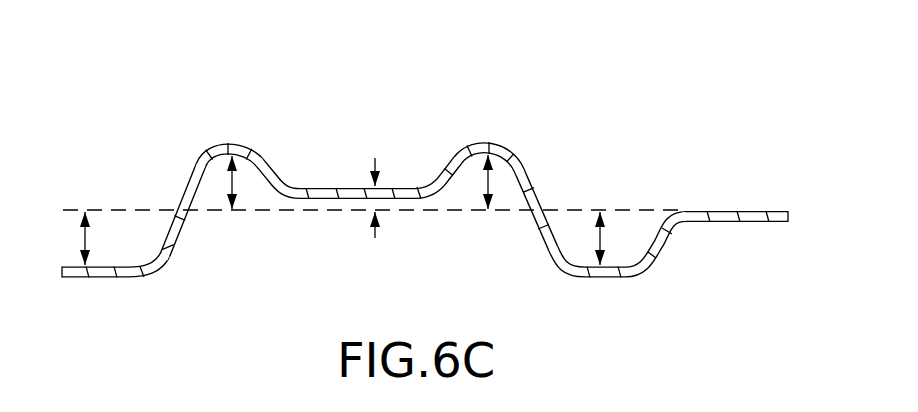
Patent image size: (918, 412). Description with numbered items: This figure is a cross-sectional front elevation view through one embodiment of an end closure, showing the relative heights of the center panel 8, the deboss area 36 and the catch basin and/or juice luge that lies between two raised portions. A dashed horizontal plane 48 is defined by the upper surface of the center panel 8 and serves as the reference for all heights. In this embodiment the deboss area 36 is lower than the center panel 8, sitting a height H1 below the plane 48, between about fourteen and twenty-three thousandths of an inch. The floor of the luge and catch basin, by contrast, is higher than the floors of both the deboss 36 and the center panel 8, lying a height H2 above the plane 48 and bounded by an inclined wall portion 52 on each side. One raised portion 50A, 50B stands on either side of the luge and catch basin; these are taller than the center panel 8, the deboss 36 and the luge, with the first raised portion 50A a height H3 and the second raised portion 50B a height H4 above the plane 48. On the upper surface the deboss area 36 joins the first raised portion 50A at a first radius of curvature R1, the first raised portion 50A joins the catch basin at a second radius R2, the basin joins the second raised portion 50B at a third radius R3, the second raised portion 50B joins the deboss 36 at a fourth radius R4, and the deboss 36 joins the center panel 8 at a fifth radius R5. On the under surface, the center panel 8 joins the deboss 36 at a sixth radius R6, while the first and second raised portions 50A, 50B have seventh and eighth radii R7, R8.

The center panel 8 is at (730, 211).
The deboss area 36 is at (102, 266).
The horizontal plane 48 is at (420, 211).
The first raised portion 50A is at (227, 142).
The second raised portion 50B is at (482, 143).
The inclined wall portion 52 is at (190, 176).
The height H1 is at (84, 238).
The height H2 is at (374, 204).
The height H3 is at (234, 186).
The height H4 is at (490, 186).
The first radius of curvature R1 is at (144, 255).
The second radius of curvature R2 is at (288, 182).
The third radius of curvature R3 is at (422, 176).
The fourth radius of curvature R4 is at (568, 246).
The fifth radius of curvature R5 is at (633, 251).
The sixth radius of curvature R6 is at (681, 233).
The seventh radius of curvature R7 is at (219, 164).
The eighth radius of curvature R8 is at (476, 166).